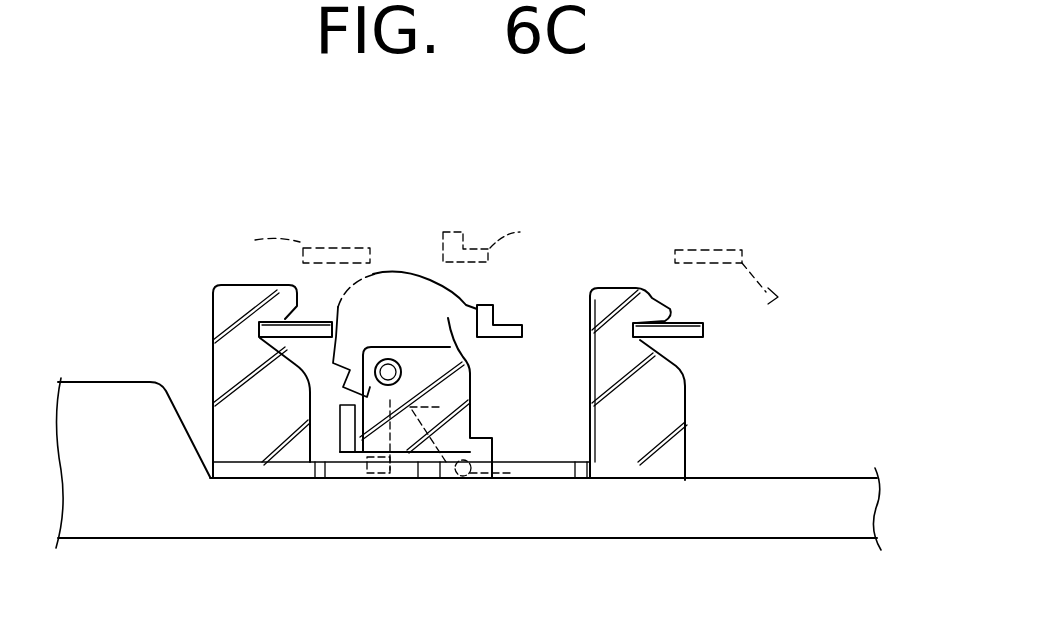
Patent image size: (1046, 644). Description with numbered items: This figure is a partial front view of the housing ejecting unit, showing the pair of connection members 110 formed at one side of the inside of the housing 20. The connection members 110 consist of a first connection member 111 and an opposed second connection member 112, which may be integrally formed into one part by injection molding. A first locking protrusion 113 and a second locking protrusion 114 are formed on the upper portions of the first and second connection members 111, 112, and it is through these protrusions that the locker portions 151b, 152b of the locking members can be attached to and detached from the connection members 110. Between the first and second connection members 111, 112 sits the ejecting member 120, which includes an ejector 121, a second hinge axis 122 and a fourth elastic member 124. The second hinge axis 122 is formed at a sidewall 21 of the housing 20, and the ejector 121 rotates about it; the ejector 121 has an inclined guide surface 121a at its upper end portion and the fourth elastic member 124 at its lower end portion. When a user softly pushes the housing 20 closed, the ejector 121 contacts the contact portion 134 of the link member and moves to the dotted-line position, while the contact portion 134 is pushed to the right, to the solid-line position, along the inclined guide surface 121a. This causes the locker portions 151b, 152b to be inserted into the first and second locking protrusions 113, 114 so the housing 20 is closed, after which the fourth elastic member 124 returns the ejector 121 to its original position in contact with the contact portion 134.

The housing 20 is at (782, 527).
The sidewall 21 is at (78, 393).
The pair of connection members 110 is at (350, 483).
The first connection member 111 is at (612, 442).
The second connection member 112 is at (248, 447).
The first locking protrusion 113 is at (652, 307).
The second locking protrusion 114 is at (217, 308).
The ejecting member 120 is at (387, 258).
The ejector 121 is at (402, 297).
The inclined guide surface 121a is at (441, 286).
The second hinge axis 122 is at (388, 385).
The fourth elastic member 124 is at (500, 465).
The contact portion 134 is at (512, 320).
The locker portion 151b is at (702, 333).
The locker portion 152b is at (311, 314).